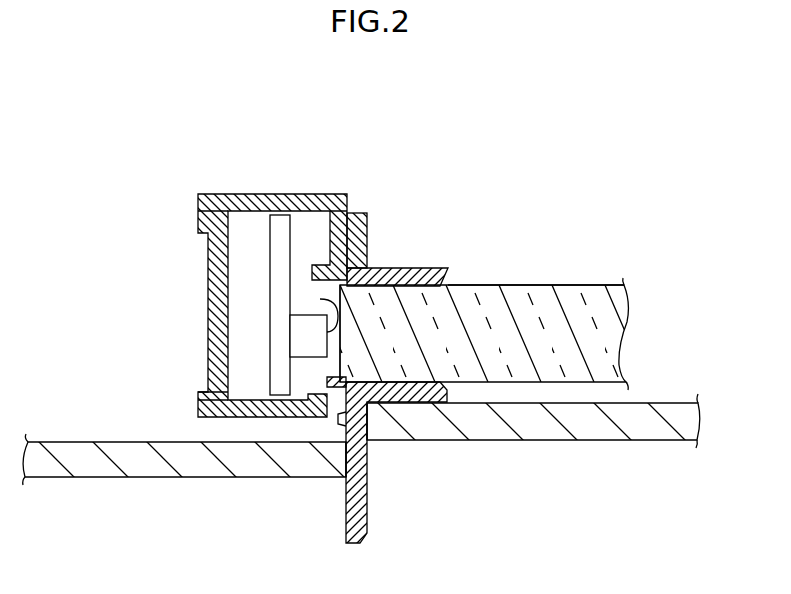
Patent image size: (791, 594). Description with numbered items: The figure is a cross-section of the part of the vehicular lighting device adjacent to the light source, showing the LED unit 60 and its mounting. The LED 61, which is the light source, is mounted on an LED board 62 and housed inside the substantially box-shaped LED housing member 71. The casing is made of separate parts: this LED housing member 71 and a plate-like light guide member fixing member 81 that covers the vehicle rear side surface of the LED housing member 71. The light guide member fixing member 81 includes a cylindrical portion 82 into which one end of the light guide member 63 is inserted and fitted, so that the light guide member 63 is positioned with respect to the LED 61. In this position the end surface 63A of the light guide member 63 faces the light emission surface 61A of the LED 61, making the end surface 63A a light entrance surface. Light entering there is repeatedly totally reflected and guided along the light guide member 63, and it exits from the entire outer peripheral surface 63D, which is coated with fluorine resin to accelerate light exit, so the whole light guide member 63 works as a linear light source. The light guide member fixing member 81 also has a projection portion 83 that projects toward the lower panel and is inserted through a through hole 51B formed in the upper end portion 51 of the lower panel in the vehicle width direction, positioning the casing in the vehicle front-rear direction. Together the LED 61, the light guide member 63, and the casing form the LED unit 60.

The LED unit 60 is at (155, 193).
The LED housing member 71 is at (245, 201).
The end surface 63A is at (340, 293).
The light guide member fixing member 81 is at (358, 243).
The cylindrical portion 82 is at (408, 276).
The outer peripheral surface 63D is at (580, 286).
The light guide member 63 is at (594, 330).
The light emission surface 61A is at (320, 299).
The LED board 62 is at (277, 356).
The LED 61 is at (310, 344).
The upper end portion 51 is at (483, 424).
The through hole 51B is at (350, 458).
The projection portion 83 is at (357, 503).